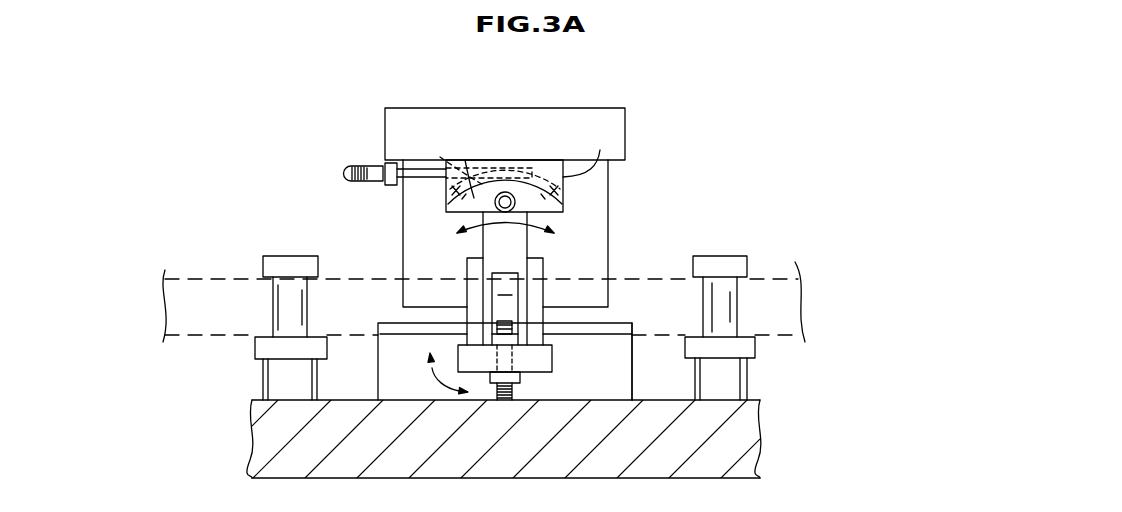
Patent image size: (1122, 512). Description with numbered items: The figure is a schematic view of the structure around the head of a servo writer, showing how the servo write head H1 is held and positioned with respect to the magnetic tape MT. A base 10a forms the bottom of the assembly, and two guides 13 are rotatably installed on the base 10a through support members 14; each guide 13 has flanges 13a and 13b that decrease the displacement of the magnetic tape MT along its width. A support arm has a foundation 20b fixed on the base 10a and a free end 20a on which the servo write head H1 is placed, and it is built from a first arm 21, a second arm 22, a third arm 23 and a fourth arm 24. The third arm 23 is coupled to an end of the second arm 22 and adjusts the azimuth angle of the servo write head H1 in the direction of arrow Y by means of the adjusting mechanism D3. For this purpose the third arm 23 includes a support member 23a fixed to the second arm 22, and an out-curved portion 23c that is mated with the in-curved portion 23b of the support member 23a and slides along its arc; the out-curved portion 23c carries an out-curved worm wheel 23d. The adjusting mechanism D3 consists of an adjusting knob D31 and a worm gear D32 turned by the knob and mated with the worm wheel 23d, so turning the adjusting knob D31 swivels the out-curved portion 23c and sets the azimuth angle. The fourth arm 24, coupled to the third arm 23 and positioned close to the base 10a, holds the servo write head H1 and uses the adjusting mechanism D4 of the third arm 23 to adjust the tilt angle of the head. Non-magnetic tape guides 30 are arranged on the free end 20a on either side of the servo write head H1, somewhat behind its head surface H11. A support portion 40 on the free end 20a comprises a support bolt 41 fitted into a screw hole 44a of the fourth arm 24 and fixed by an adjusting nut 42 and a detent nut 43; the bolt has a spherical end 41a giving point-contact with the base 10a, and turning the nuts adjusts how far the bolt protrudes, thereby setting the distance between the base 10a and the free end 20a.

The base 10a is at (313, 452).
The guide 13 is at (795, 232).
The flange 13a is at (262, 264).
The flange 13b is at (256, 348).
The support member 14 is at (278, 380).
The free end 20a is at (404, 384).
The foundation 20b is at (632, 386).
The first arm 21 is at (608, 185).
The second arm 22 is at (618, 122).
The third arm 23 is at (472, 226).
The support member 23a is at (600, 150).
The in-curved portion 23b is at (505, 192).
The out-curved portion 23c is at (465, 160).
The out-curved worm wheel 23d is at (440, 157).
The fourth arm 24 is at (457, 350).
The tape guide 30 is at (545, 258).
The support portion 40 is at (480, 397).
The support bolt 41 is at (516, 391).
The spherical end 41a is at (504, 400).
The adjusting nut 42 is at (520, 338).
The detent nut 43 is at (522, 379).
The screw hole 44a is at (500, 359).
The adjusting mechanism D3 is at (345, 152).
The adjusting knob D31 is at (348, 175).
The worm gear D32 is at (484, 200).
The adjusting mechanism D4 is at (532, 187).
The servo write head H1 is at (528, 284).
The head surface H11 is at (505, 298).
The magnetic tape MT is at (760, 283).
The arrow Y is at (505, 239).